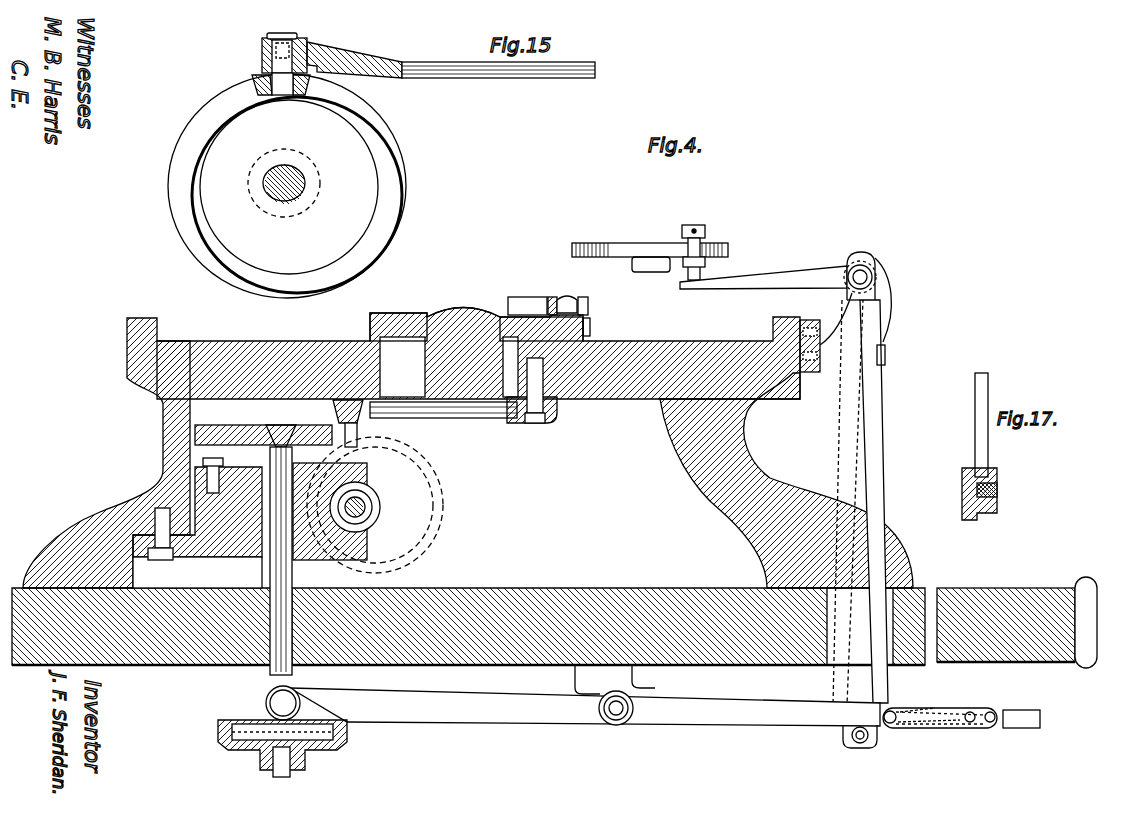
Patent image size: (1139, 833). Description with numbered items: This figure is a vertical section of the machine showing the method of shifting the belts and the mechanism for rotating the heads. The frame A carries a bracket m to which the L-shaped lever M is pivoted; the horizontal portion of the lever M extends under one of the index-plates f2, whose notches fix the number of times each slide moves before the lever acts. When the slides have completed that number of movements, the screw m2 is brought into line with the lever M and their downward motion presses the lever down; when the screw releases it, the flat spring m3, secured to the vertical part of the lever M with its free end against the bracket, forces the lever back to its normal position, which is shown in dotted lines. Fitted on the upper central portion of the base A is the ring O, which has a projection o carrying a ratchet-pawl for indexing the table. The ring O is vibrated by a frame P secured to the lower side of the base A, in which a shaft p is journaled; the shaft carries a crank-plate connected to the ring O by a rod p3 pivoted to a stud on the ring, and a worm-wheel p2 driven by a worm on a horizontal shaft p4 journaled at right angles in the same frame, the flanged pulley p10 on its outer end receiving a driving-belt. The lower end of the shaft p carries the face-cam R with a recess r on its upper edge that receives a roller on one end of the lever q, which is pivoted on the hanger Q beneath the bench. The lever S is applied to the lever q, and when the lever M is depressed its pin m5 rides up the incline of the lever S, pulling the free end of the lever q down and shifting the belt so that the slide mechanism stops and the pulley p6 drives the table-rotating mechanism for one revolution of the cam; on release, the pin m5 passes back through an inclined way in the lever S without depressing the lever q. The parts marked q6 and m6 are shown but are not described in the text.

In FIG. 4, the frame A is at (615, 577).
In FIG. 4, the ring O is at (418, 315).
In FIG. 4, the projection o is at (590, 328).
In FIG. 4, the rod q6 is at (557, 410).
In FIG. 4, the lever q is at (565, 730).
In FIG. 4, the hanger Q is at (655, 688).
In FIG. 4, the frame P is at (268, 678).
In FIG. 15, the shaft p is at (308, 190).
In FIG. 4, the shaft p is at (292, 778).
In FIG. 4, the worm-wheel p2 is at (360, 548).
In FIG. 4, the rod p3 is at (389, 505).
In FIG. 4, the shaft p4 is at (372, 512).
In FIG. 4, the pulley p6 is at (372, 497).
In FIG. 4, the flanged pulley p10 is at (425, 543).
In FIG. 15, the face-cam R is at (378, 255).
In FIG. 4, the face-cam R is at (340, 748).
In FIG. 15, the recess r is at (303, 100).
In FIG. 4, the recess r is at (300, 706).
In FIG. 4, the index-plate f2 is at (728, 250).
In FIG. 4, the screw m2 is at (703, 272).
In FIG. 4, the L-shaped lever M is at (782, 268).
In FIG. 17, the L-shaped lever M is at (975, 420).
In FIG. 4, the bracket m is at (875, 298).
In FIG. 4, the spring m3 is at (885, 320).
In FIG. 17, the pin m5 is at (990, 478).
In FIG. 4, the link m6 is at (900, 708).
In FIG. 4, the lever S is at (925, 730).